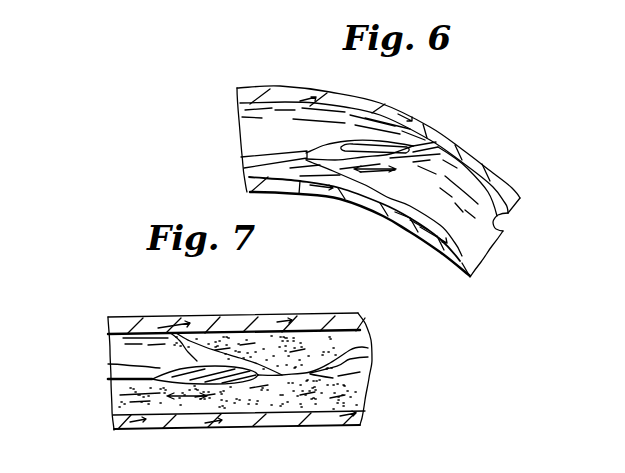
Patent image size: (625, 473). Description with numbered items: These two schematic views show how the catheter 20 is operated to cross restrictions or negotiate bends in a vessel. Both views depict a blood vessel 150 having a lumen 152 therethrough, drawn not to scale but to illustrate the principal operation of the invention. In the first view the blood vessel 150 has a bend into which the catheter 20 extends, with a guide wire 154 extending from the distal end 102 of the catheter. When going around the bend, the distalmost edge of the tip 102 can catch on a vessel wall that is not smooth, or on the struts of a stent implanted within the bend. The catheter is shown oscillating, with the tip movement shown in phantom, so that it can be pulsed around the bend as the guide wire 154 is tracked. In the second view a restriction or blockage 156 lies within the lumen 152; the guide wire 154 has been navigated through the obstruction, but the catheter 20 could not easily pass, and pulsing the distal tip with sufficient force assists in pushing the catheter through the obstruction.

In FIG. 6, the catheter 20 is at (243, 157).
In FIG. 7, the catheter 20 is at (108, 364).
In FIG. 6, the distal end 102 is at (435, 142).
In FIG. 6, the blood vessel 150 is at (470, 165).
In FIG. 7, the blood vessel 150 is at (323, 313).
In FIG. 6, the lumen 152 is at (478, 236).
In FIG. 7, the lumen 152 is at (368, 357).
In FIG. 6, the guide wire 154 is at (502, 231).
In FIG. 7, the guide wire 154 is at (368, 348).
In FIG. 7, the restriction or blockage 156 is at (270, 348).